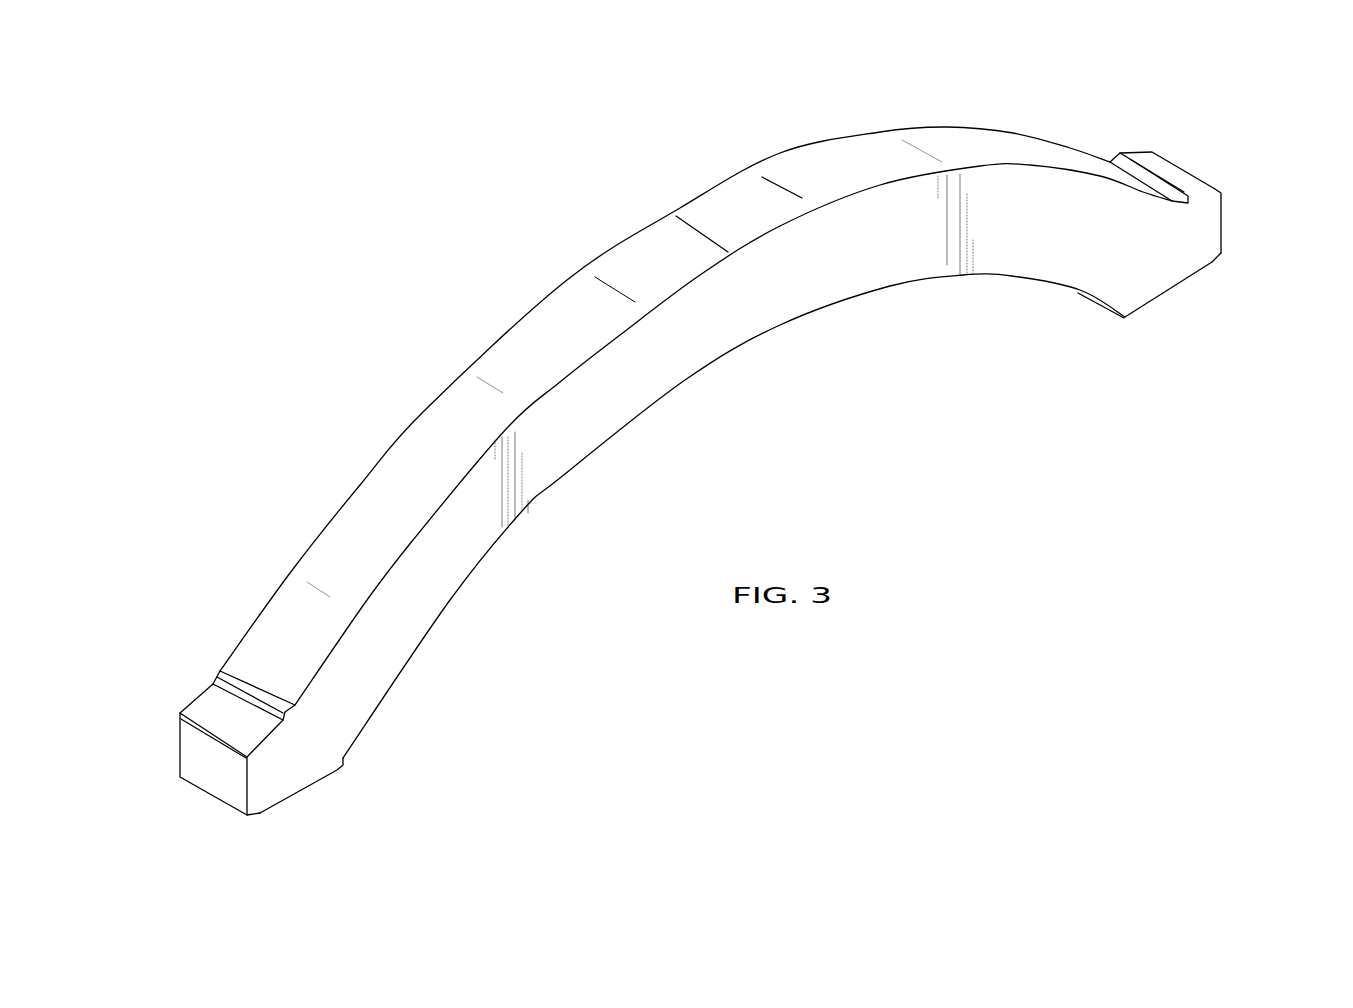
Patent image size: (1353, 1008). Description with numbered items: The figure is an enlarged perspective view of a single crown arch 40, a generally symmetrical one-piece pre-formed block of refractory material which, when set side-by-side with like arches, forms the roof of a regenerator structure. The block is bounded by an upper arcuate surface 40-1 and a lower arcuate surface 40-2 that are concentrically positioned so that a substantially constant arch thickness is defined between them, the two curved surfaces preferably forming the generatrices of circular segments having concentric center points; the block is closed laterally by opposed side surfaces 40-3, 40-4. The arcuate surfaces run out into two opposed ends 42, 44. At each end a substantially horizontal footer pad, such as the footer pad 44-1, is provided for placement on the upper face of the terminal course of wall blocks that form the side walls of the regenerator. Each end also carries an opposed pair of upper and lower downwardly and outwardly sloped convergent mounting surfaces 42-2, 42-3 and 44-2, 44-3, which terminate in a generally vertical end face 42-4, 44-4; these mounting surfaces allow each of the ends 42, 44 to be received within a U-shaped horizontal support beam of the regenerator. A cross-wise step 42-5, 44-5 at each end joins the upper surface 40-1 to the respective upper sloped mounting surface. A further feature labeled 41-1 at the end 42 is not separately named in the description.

The crown arch 40 is at (300, 335).
The upper arcuate surface 40-1 is at (860, 157).
The lower arcuate surface 40-2 is at (888, 286).
The side surface 40-3 is at (635, 390).
The side surface 40-4 is at (416, 410).
The bottom surface of first end block 41-1 is at (1163, 298).
The end 42 is at (1142, 131).
The upper sloped mounting surface 42-2 is at (1166, 172).
The lower sloped mounting surface 42-3 is at (1212, 264).
The vertical end face 42-4 is at (1216, 188).
The cross-wise step 42-5 is at (1118, 160).
The end 44 is at (309, 807).
The footer pad 44-1 is at (322, 781).
The upper sloped mounting surface 44-2 is at (207, 707).
The lower sloped mounting surface 44-3 is at (258, 818).
The vertical end face 44-4 is at (198, 757).
The cross-wise step 44-5 is at (247, 687).